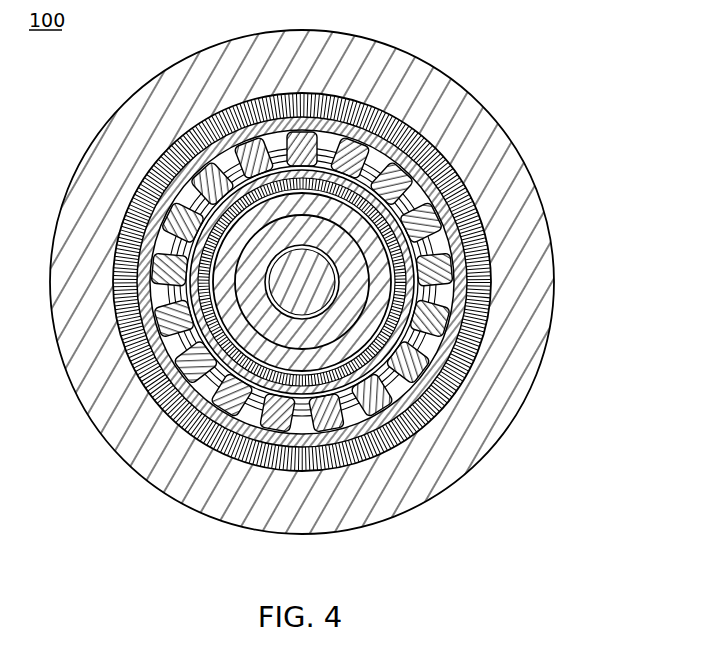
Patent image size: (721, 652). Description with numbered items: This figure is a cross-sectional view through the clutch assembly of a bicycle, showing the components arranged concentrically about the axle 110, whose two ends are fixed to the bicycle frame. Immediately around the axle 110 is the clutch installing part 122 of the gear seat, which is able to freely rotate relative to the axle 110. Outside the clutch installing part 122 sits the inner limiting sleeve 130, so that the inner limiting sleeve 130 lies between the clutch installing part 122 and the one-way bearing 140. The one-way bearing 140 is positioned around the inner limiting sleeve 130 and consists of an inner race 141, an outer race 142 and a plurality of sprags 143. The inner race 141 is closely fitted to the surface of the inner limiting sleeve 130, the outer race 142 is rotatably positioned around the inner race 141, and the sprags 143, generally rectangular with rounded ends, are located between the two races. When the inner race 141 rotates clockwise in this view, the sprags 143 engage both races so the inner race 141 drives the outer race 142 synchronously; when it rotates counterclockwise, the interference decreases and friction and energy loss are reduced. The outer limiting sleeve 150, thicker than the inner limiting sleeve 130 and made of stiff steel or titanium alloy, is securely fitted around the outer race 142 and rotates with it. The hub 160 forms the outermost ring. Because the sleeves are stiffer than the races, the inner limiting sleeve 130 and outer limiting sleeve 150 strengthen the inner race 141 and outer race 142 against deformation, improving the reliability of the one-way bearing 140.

The axle 110 is at (333, 320).
The clutch installing part 122 is at (418, 430).
The inner limiting sleeve 130 is at (425, 348).
The one-way bearing 140 is at (411, 282).
The inner race 141 is at (420, 293).
The outer race 142 is at (455, 253).
The sprags 143 is at (457, 273).
The outer limiting sleeve 150 is at (463, 215).
The hub 160 is at (485, 150).